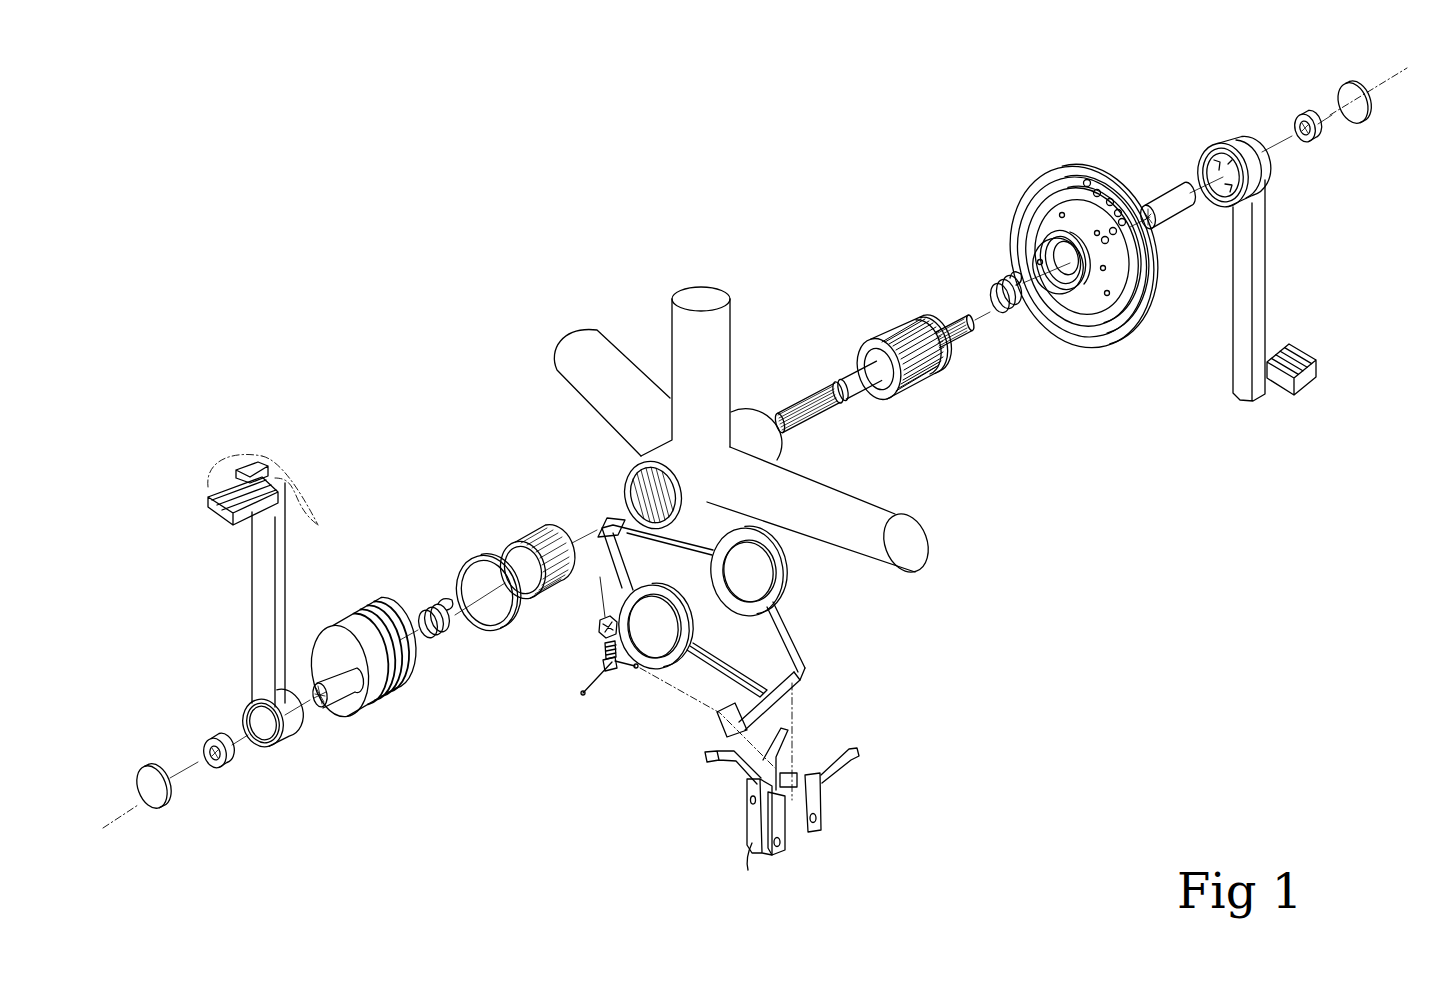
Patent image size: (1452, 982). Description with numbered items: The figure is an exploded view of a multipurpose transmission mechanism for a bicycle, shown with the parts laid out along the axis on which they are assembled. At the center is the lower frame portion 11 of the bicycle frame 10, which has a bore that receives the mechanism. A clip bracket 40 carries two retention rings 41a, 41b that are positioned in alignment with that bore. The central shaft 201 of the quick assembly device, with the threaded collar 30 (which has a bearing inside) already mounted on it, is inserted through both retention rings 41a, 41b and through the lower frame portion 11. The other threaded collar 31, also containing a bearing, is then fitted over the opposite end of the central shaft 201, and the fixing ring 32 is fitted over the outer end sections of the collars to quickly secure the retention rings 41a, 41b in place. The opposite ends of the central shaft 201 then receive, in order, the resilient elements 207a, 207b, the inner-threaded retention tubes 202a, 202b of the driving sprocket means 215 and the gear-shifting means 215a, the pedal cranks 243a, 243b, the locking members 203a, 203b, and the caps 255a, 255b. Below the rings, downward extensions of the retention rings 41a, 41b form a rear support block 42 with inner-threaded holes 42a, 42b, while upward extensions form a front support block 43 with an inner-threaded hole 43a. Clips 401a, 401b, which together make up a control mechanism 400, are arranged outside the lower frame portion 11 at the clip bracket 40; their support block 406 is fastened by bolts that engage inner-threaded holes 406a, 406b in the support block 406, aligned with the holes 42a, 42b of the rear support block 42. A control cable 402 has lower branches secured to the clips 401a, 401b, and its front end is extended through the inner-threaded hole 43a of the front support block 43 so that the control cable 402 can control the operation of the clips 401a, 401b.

The frame 10 is at (733, 411).
The lower frame portion 11 is at (757, 425).
The front support block 43 is at (627, 518).
The inner-threaded hole 43a is at (600, 531).
The clip bracket 40 is at (745, 661).
The retention ring 41a is at (650, 592).
The retention ring 41b is at (777, 552).
The rear support block 42 is at (767, 692).
The inner-threaded hole 42a is at (735, 725).
The inner-threaded hole 42b is at (797, 682).
The control cable 402 is at (608, 610).
The control mechanism 400 is at (819, 827).
The clip 401a is at (747, 813).
The clip 401b is at (820, 788).
The support block 406 is at (820, 847).
The inner-threaded hole 406a is at (752, 843).
The inner-threaded hole 406b is at (817, 817).
The pedal crank 243a is at (265, 622).
The gear-shifting means 215a is at (360, 603).
The inner-threaded retention tube 202a is at (353, 685).
The resilient element 207a is at (433, 605).
The fixing ring 32 is at (462, 560).
The threaded collar 31 is at (515, 518).
The locking member 203a is at (232, 770).
The cap 255a is at (158, 808).
The central shaft 201 is at (838, 410).
The threaded collar 30 is at (923, 392).
The resilient element 207b is at (998, 285).
The driving sprocket means 215 is at (1093, 347).
The inner-threaded retention tube 202b is at (1168, 198).
The pedal crank 243b is at (1262, 243).
The locking member 203b is at (1320, 148).
The cap 255b is at (1350, 90).